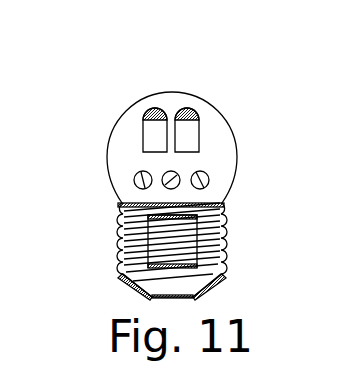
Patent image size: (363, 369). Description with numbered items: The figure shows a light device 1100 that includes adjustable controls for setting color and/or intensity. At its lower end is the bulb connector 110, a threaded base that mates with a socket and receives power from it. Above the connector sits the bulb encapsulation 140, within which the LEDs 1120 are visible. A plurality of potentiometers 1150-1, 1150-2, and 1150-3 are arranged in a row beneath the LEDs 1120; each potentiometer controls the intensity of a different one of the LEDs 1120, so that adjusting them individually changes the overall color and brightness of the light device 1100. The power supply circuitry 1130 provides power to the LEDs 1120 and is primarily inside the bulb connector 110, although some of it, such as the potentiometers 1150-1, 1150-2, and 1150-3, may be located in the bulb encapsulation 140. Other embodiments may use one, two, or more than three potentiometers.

The light device 1100 is at (92, 103).
The LEDs 1120 is at (212, 101).
The bulb encapsulation 140 is at (172, 92).
The potentiometer 1150-1 is at (134, 177).
The potentiometer 1150-2 is at (179, 169).
The potentiometer 1150-3 is at (209, 177).
The bulb connector 110 is at (117, 237).
The power supply circuitry 1130 is at (223, 242).